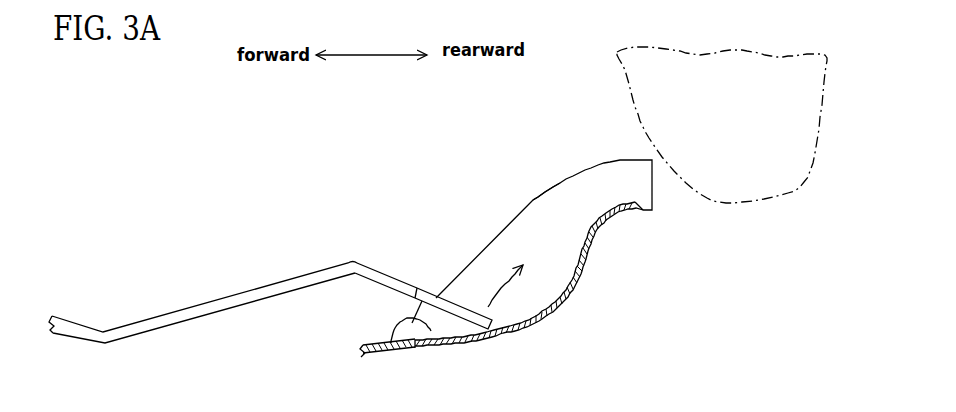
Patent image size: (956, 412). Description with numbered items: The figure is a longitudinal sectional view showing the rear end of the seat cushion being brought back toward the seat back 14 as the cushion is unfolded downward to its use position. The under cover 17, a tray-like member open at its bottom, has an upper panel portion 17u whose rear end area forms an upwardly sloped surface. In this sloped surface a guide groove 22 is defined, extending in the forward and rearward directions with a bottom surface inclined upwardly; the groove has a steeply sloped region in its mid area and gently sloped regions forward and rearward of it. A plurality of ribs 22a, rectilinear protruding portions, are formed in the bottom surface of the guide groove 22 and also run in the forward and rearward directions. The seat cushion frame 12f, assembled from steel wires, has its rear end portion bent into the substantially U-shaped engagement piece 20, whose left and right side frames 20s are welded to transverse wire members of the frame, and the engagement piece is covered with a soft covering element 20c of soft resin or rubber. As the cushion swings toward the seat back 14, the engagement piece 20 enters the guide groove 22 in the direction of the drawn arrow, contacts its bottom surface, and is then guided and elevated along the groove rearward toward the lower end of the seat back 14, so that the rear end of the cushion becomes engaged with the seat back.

The seat cushion frame 12f is at (196, 304).
The seat back 14 is at (626, 95).
The under cover 17 is at (503, 218).
The upper panel portion 17u is at (545, 193).
The engagement piece 20 is at (408, 248).
The side frames 20s is at (373, 276).
The soft covering element 20c is at (417, 289).
The guide groove 22 is at (573, 236).
The ribs 22a is at (358, 340).